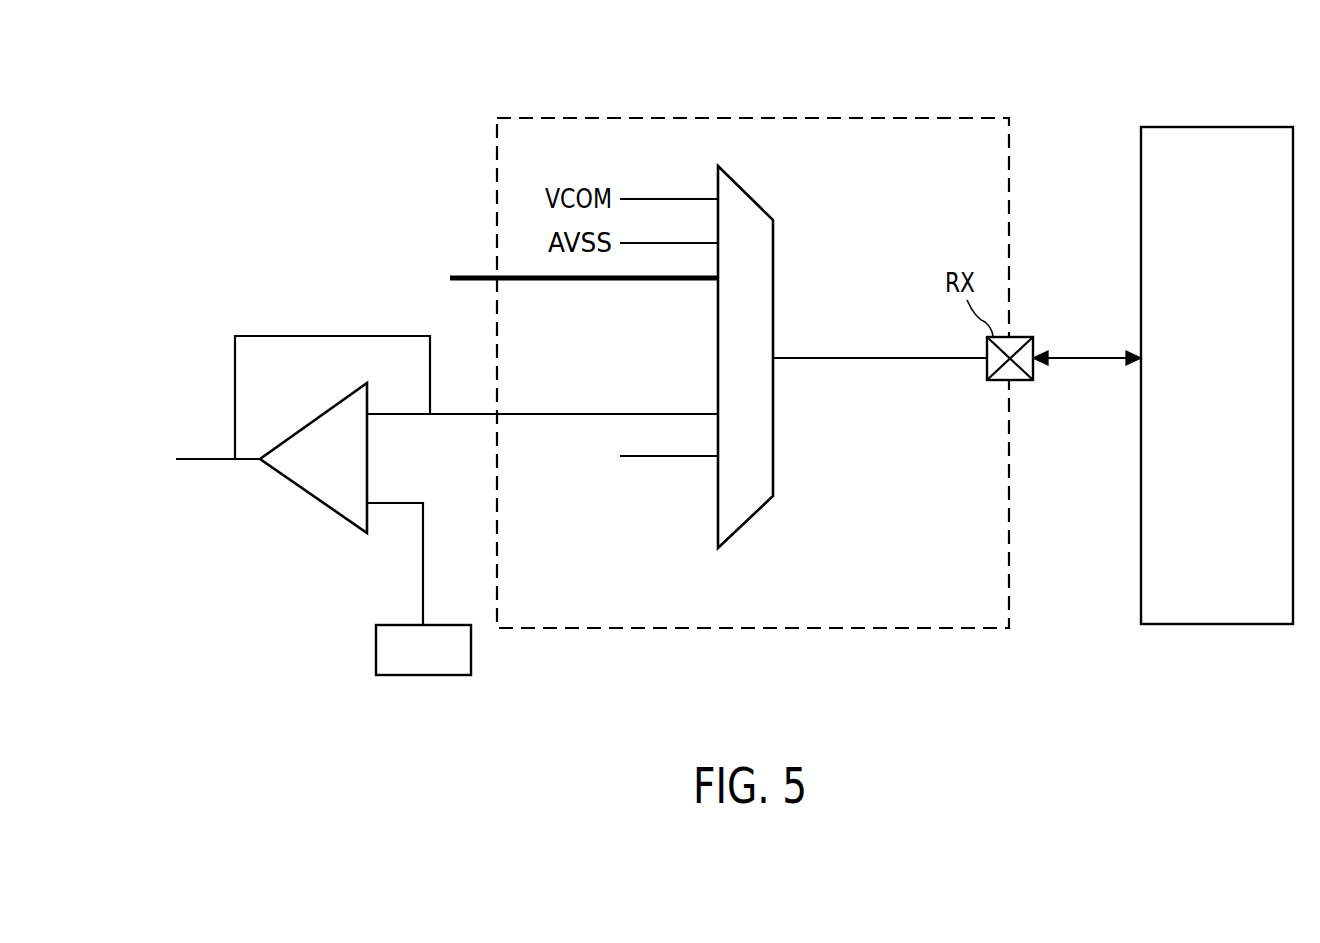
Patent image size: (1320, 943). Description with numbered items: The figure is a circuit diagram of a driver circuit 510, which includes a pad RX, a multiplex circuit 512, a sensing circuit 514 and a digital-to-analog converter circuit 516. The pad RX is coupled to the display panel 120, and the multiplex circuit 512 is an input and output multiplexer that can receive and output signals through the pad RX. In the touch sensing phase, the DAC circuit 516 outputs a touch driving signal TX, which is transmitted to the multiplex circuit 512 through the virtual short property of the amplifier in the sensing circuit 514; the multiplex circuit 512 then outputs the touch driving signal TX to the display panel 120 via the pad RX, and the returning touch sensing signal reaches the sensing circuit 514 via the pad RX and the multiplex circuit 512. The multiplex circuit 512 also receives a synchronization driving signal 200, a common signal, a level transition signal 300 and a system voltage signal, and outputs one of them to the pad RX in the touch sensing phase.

The display panel 120 is at (1216, 126).
The synchronization driving signal 200 is at (645, 457).
The level transition signal 300 is at (558, 278).
The driver circuit 510 is at (608, 117).
The multiplex circuit 512 is at (748, 185).
The sensing circuit 514 is at (312, 498).
The digital-to-analog converter (DAC) circuit 516 is at (376, 650).